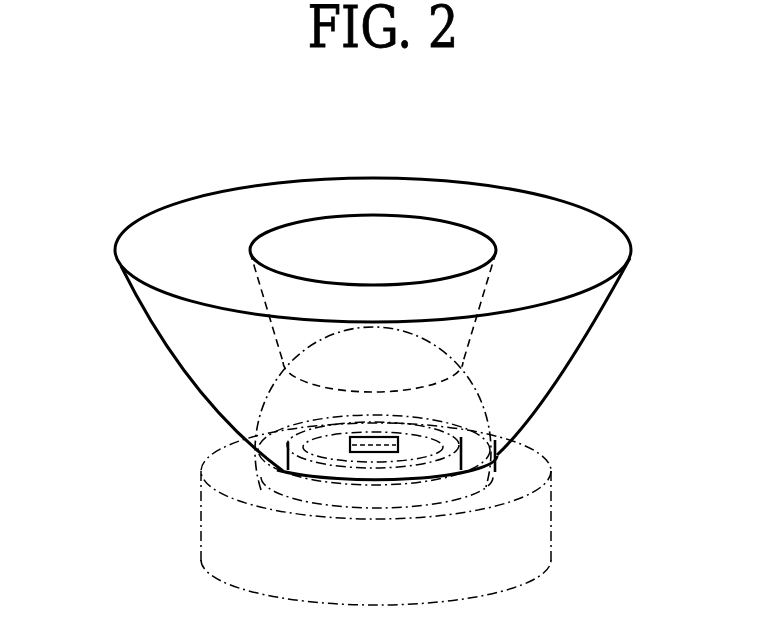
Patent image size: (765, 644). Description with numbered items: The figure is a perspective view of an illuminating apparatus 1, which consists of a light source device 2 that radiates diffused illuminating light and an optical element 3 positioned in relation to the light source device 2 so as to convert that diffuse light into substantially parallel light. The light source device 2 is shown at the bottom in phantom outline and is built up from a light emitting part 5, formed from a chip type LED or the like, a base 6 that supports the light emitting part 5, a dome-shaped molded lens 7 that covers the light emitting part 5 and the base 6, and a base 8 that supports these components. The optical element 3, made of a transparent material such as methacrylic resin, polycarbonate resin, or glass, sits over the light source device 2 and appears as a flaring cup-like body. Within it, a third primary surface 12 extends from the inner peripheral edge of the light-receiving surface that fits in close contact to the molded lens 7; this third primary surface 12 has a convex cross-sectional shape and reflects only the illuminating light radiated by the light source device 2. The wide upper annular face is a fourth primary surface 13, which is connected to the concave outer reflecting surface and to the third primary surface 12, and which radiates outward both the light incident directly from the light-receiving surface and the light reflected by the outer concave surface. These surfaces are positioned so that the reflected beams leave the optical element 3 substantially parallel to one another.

The illuminating apparatus 1 is at (673, 204).
The light source device 2 is at (623, 414).
The optical element 3 is at (574, 248).
The light emitting part 5 is at (540, 446).
The base 6 is at (515, 490).
The molded lens 7 is at (467, 402).
The base 8 is at (530, 545).
The primary surface-3 12 is at (375, 235).
The primary surface-4 13 is at (166, 250).